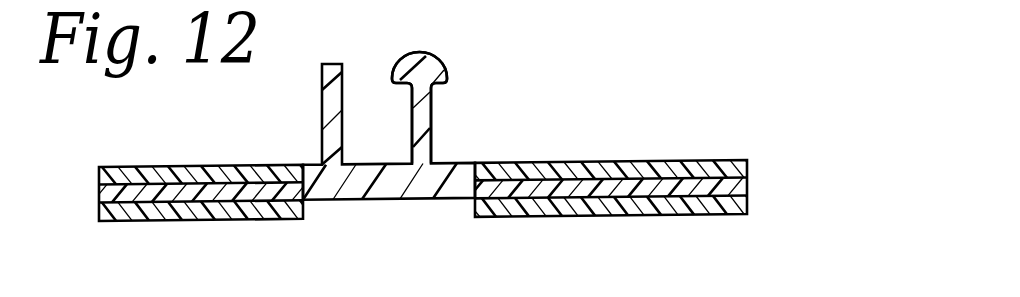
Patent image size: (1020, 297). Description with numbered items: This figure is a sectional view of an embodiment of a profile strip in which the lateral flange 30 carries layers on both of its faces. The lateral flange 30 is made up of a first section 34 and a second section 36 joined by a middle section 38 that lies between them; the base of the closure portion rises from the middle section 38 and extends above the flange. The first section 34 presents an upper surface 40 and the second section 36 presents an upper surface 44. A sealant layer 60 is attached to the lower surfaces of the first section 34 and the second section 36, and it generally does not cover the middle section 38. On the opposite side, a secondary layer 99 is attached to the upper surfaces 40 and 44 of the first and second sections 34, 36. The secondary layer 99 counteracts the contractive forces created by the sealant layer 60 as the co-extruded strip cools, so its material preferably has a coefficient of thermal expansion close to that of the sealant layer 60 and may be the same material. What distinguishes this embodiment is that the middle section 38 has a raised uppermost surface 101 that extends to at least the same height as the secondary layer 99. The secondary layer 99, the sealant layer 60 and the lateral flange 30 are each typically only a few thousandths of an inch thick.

The lateral flange 30 is at (470, 160).
The first section 34 is at (610, 190).
The second section 36 is at (218, 184).
The middle section 38 is at (413, 201).
The upper surface 40 is at (680, 168).
The upper surface 44 is at (150, 184).
The sealant layer 60 is at (757, 210).
The secondary layer 99 is at (752, 163).
The raised uppermost surface 101 is at (443, 165).